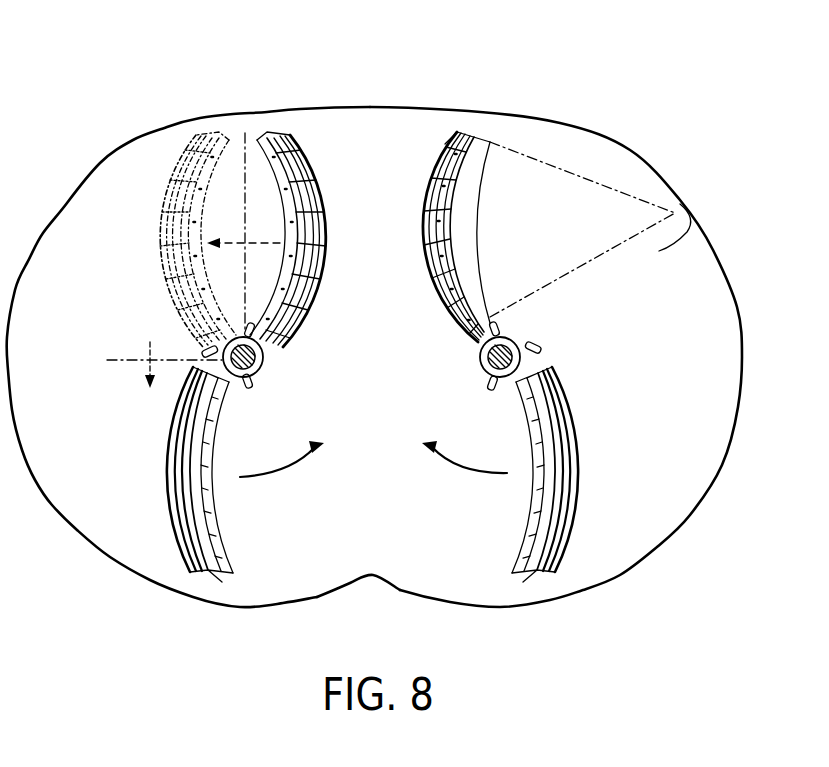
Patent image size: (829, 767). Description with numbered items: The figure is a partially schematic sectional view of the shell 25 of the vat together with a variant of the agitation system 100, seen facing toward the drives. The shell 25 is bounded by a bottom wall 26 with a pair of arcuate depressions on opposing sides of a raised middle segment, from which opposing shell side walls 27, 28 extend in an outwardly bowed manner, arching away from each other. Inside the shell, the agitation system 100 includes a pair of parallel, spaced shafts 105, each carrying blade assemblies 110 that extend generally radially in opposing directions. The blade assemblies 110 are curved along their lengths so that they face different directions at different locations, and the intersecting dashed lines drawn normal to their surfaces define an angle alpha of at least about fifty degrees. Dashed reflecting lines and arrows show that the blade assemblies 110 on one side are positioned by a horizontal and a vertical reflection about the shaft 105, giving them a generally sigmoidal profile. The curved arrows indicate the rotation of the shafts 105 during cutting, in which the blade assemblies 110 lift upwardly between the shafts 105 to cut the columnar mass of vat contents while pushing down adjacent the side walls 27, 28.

The shell 25 is at (453, 106).
The bottom wall 26 is at (350, 581).
The shell side wall 27 is at (7, 383).
The shell side wall 28 is at (738, 376).
The agitation system 100 is at (635, 360).
The shaft 105 is at (478, 353).
The blade assembly 110 is at (426, 200).